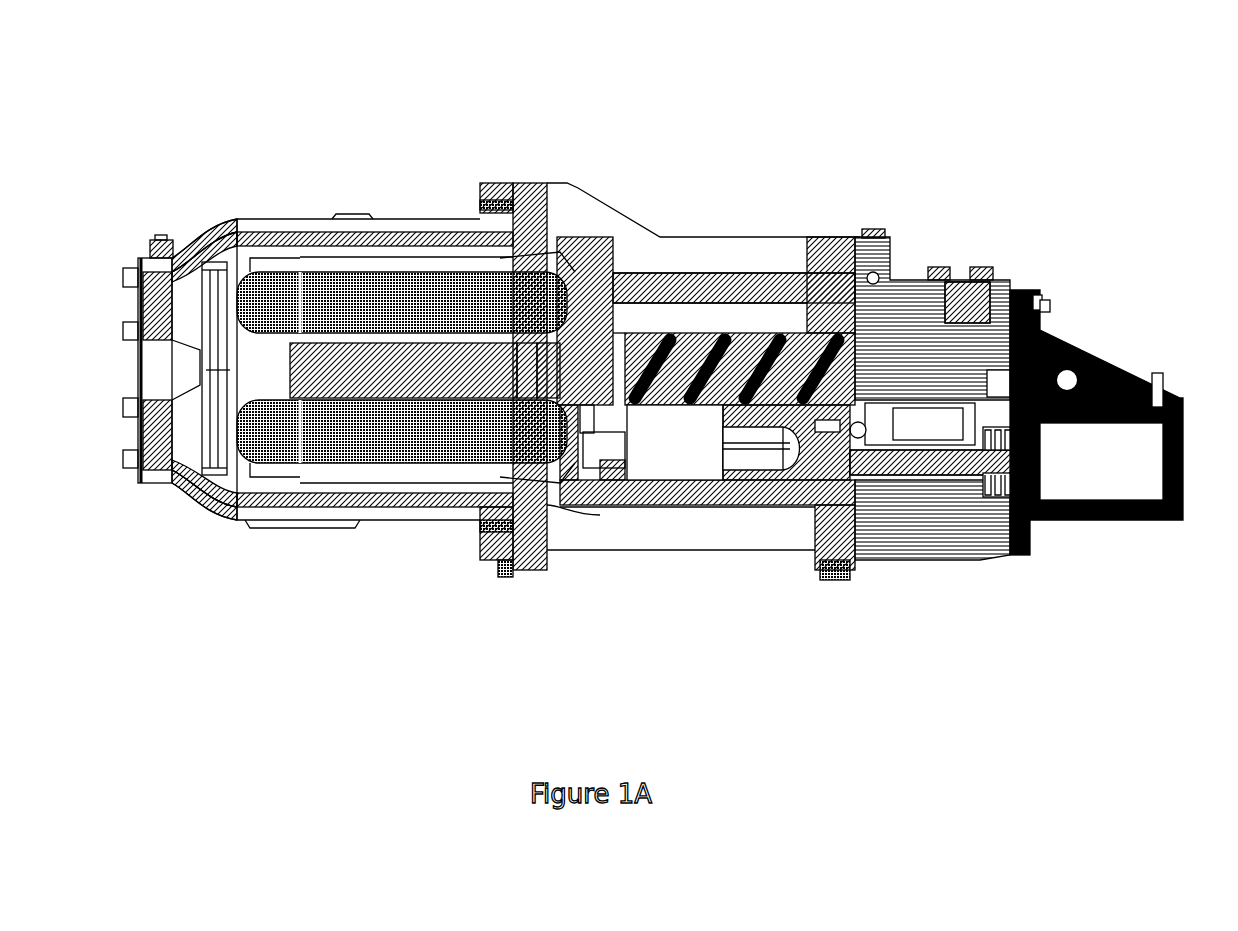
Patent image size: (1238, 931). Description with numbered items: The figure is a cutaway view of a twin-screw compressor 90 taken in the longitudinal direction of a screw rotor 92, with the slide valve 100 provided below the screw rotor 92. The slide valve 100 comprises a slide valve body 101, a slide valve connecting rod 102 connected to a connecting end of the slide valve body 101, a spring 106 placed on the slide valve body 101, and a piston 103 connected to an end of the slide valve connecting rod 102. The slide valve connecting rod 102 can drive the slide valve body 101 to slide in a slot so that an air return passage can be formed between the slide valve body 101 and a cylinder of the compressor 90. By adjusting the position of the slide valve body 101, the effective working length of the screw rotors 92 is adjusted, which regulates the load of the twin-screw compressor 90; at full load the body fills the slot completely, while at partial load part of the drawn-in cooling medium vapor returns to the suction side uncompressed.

The twin-screw compressor 90 is at (862, 183).
The screw rotor 92 is at (735, 365).
The slide valve 100 is at (720, 444).
The slide valve body 101 is at (752, 483).
The slide valve connecting rod 102 is at (960, 476).
The spring 106 is at (985, 497).
The piston 103 is at (1055, 520).